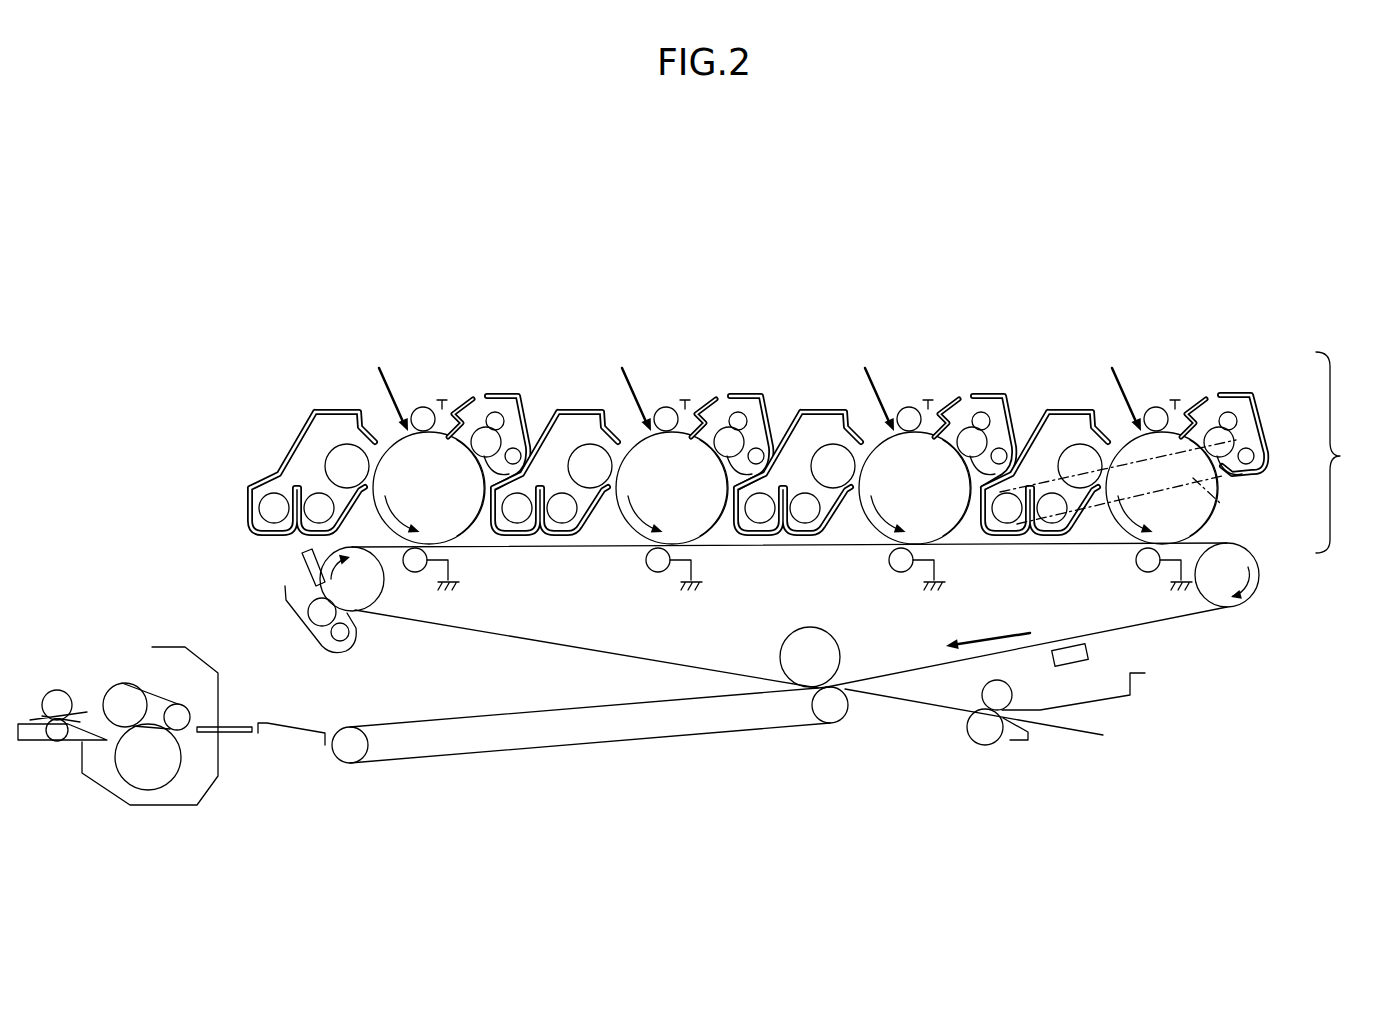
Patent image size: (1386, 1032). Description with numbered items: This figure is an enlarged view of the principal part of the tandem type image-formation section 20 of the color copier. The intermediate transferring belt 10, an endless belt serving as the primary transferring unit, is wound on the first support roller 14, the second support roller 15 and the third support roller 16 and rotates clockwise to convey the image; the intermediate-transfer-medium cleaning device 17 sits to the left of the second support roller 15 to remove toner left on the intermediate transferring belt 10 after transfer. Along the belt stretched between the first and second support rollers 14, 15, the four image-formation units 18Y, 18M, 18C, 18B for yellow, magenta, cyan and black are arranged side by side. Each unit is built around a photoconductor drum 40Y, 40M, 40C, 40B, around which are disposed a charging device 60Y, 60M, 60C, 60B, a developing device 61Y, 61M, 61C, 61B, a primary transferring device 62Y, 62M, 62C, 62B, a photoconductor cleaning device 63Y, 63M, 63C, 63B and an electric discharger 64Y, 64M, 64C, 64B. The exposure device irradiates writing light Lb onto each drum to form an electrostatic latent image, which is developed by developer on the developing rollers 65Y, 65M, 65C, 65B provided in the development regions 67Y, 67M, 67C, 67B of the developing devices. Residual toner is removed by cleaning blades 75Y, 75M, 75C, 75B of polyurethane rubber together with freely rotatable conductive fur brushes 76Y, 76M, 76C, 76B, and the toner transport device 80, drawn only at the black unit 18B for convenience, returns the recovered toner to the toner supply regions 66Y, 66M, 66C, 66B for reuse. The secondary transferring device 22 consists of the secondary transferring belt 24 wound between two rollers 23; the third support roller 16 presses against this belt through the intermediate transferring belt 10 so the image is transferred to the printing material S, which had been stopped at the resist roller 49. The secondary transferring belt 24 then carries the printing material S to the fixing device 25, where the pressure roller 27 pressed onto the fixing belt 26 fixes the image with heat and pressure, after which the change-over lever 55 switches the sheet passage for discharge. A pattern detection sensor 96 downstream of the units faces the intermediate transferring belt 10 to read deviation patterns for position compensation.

The intermediate transferring belt 10 is at (482, 633).
The first support roller 14 is at (1254, 563).
The second support roller 15 is at (368, 600).
The third support roller 16 is at (784, 645).
The intermediate-transfer-medium cleaning device 17 is at (286, 600).
The image-formation unit 18Y is at (392, 420).
The image-formation unit 18M is at (636, 420).
The image-formation unit 18C is at (877, 420).
The image-formation unit 18B is at (1141, 420).
The tandem type image-formation section 20 is at (1347, 452).
The secondary transferring device 22 is at (632, 765).
The rollers 23 is at (835, 722).
The secondary transferring belt 24 is at (530, 752).
The fixing device 25 is at (203, 766).
The fixing belt 26 is at (158, 693).
The pressure roller 27 is at (183, 757).
The photoconductor drum 40Y is at (502, 556).
The photoconductor drum 40M is at (747, 556).
The photoconductor drum 40C is at (988, 556).
The photoconductor drum 40B is at (1083, 552).
The resist roller 49 is at (1005, 759).
The change-over lever 55 is at (36, 738).
The charging device 60Y is at (417, 392).
The charging device 60M is at (661, 392).
The charging device 60C is at (903, 392).
The charging device 60B is at (1149, 392).
The developing device 61Y is at (383, 410).
The developing device 61M is at (626, 410).
The developing device 61C is at (869, 410).
The developing device 61B is at (1117, 410).
The primary transferring device 62Y is at (463, 584).
The primary transferring device 62M is at (636, 584).
The primary transferring device 62C is at (879, 584).
The primary transferring device 62B is at (1126, 584).
The photoconductor cleaning device 63Y is at (496, 410).
The photoconductor cleaning device 63M is at (740, 410).
The photoconductor cleaning device 63C is at (982, 410).
The photoconductor cleaning device 63B is at (1229, 409).
The electric discharger 64Y is at (456, 377).
The electric discharger 64M is at (700, 377).
The electric discharger 64C is at (942, 377).
The electric discharger 64B is at (1189, 377).
The developing roller 65Y is at (348, 430).
The developing roller 65M is at (592, 430).
The developing roller 65C is at (834, 430).
The developing roller 65B is at (1081, 430).
The toner supply region 66Y is at (294, 424).
The toner supply region 66M is at (538, 424).
The toner supply region 66C is at (780, 424).
The toner supply region 66B is at (1026, 424).
The development region 67Y is at (329, 410).
The development region 67M is at (573, 410).
The development region 67C is at (814, 410).
The development region 67B is at (1061, 410).
The cleaning blade 75Y is at (429, 488).
The cleaning blade 75M is at (672, 488).
The cleaning blade 75C is at (915, 488).
The cleaning blade 75B is at (1206, 453).
The conductive fur brush 76Y is at (451, 488).
The conductive fur brush 76M is at (694, 488).
The conductive fur brush 76C is at (937, 488).
The conductive fur brush 76B is at (1252, 476).
The toner transport device 80 is at (1220, 503).
The pattern detection sensor 96 is at (1087, 646).
The writing light Lb is at (386, 374).
The printing material S is at (910, 699).